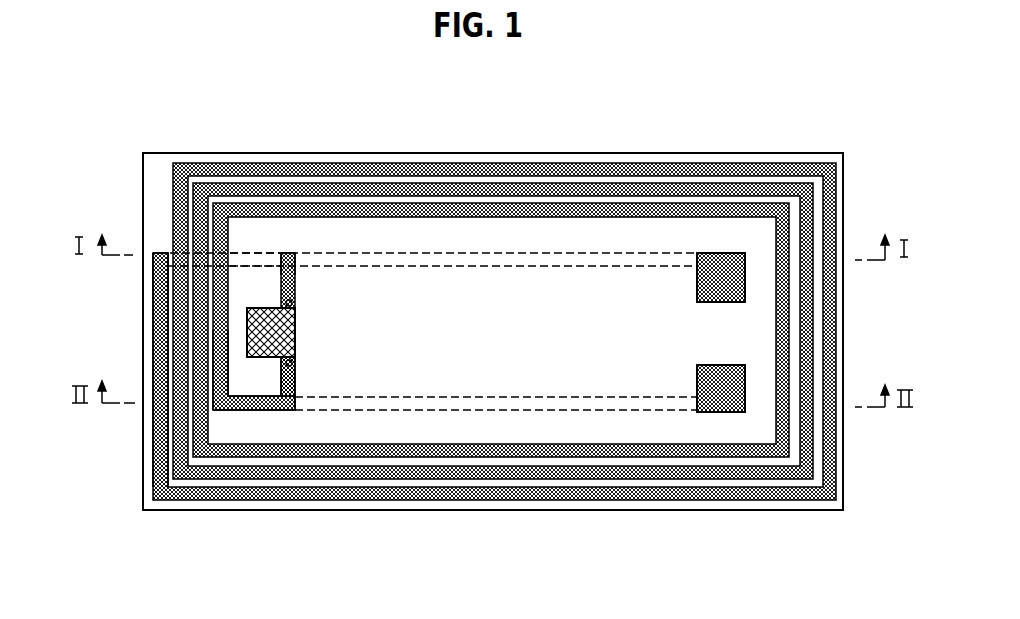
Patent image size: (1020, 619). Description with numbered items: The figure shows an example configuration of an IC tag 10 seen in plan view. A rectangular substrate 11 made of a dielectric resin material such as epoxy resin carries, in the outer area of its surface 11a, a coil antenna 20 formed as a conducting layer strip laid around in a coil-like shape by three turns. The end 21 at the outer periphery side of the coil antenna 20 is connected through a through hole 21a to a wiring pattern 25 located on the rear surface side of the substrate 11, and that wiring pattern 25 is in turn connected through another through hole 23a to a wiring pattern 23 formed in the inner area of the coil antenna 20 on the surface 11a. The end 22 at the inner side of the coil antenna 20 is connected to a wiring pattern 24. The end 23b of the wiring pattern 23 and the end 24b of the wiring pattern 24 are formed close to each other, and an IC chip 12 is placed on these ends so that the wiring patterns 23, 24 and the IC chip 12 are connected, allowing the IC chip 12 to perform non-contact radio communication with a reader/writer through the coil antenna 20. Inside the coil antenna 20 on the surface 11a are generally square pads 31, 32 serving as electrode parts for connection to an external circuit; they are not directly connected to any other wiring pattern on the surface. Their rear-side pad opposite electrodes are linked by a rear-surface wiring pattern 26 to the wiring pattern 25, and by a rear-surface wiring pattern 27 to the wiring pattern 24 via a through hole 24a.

The IC tag 10 is at (547, 512).
The substrate 11 is at (377, 512).
The surface 11a is at (672, 510).
The IC chip 12 is at (258, 322).
The coil antenna 20 is at (440, 163).
The end at the outer periphery side 21 is at (163, 252).
The through hole 21a is at (155, 267).
The end at the inner side 22 is at (222, 410).
The wiring pattern 23 is at (297, 289).
The through hole 23a is at (284, 254).
The end of the wiring pattern 23b is at (292, 303).
The wiring pattern 24 is at (296, 386).
The through hole 24a is at (287, 410).
The end of the wiring pattern 24b is at (292, 363).
The wiring pattern 25 is at (253, 260).
The wiring pattern 26 is at (462, 266).
The wiring pattern 27 is at (473, 397).
The pad 31 is at (729, 264).
The pad 32 is at (724, 404).